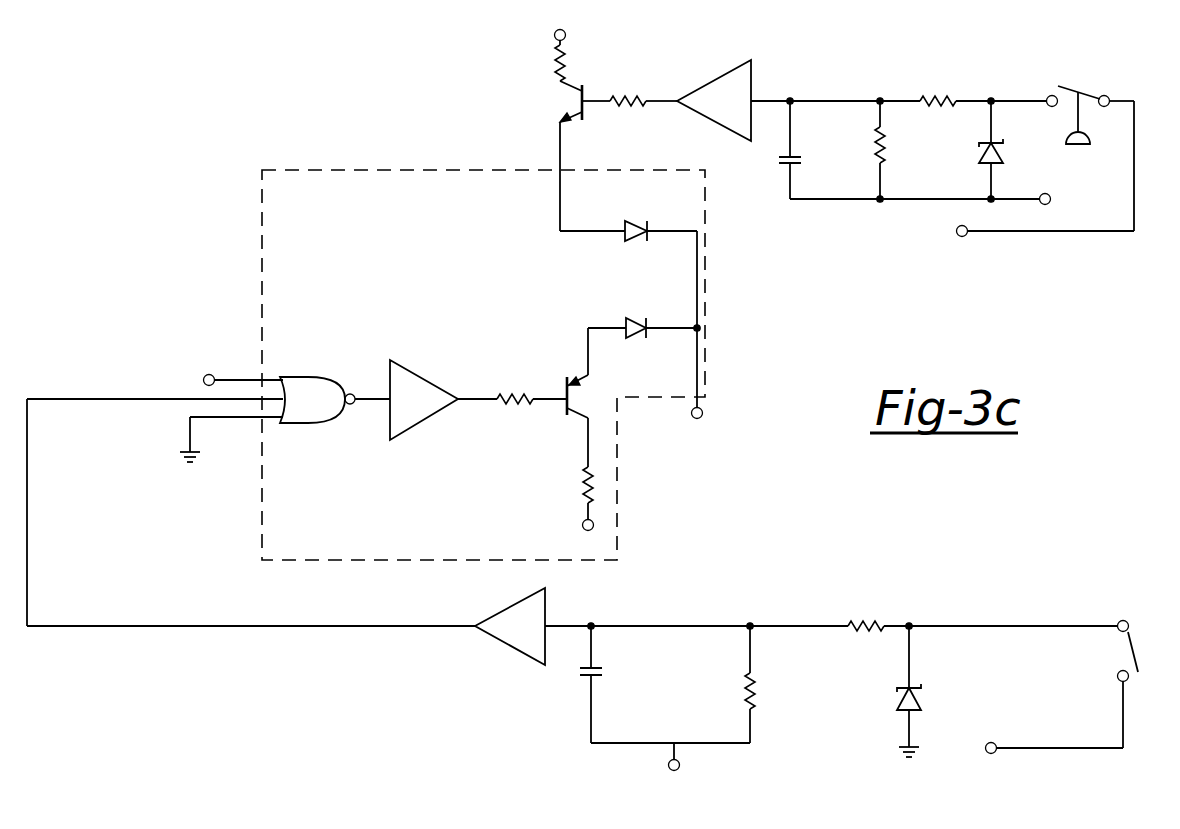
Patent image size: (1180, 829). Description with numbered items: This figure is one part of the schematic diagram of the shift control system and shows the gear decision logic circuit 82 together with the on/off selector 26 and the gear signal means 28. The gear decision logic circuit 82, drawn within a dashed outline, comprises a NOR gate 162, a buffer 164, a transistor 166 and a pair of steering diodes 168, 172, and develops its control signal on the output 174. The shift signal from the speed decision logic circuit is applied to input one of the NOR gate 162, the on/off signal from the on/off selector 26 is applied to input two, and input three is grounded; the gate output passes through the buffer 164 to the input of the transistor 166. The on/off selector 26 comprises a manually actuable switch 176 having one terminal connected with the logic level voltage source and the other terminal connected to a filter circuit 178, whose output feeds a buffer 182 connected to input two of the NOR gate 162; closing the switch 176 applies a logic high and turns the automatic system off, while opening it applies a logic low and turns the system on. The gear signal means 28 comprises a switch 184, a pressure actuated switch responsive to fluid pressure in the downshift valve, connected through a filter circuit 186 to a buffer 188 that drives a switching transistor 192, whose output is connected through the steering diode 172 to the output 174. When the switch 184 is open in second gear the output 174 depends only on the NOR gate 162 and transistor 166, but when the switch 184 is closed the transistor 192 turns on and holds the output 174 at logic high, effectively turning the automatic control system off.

The on/off selector 26 is at (855, 663).
The gear signal means 28 is at (954, 140).
The gear decision logic circuit 82 is at (477, 137).
The NOR gate 162 is at (375, 347).
The buffer 164 is at (413, 370).
The transistor 166 is at (567, 378).
The steering diode 168 is at (633, 317).
The steering diode 172 is at (637, 243).
The output 174 is at (704, 410).
The manually actuable switch 176 is at (1151, 602).
The filter circuit 178 is at (723, 618).
The buffer 182 is at (491, 616).
The switch 184 is at (1087, 87).
The filter circuit 186 is at (968, 101).
The buffer 188 is at (753, 78).
The switching transistor 192 is at (582, 90).